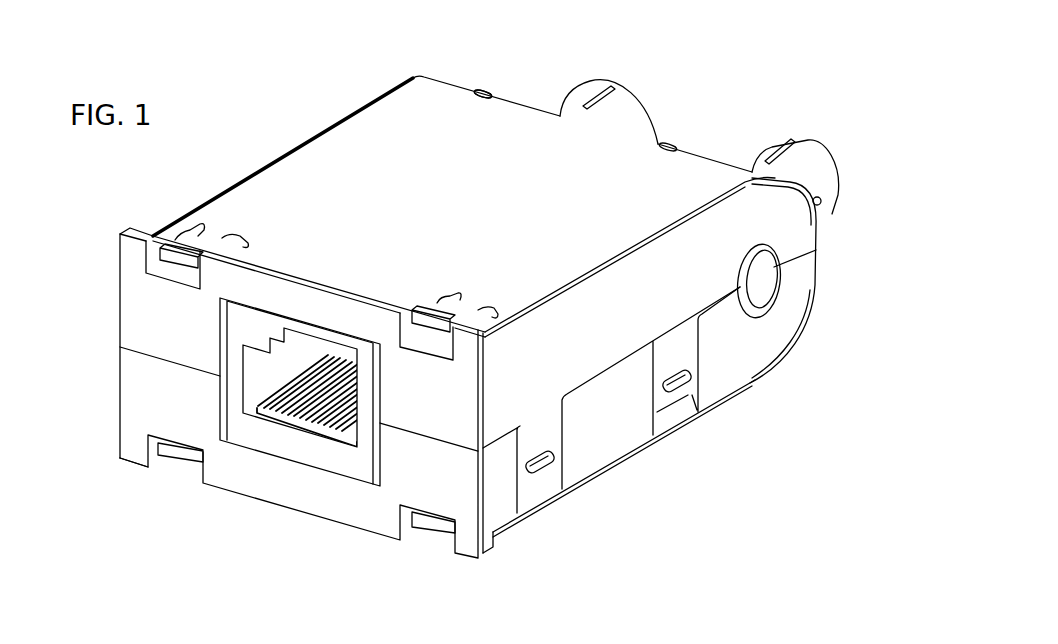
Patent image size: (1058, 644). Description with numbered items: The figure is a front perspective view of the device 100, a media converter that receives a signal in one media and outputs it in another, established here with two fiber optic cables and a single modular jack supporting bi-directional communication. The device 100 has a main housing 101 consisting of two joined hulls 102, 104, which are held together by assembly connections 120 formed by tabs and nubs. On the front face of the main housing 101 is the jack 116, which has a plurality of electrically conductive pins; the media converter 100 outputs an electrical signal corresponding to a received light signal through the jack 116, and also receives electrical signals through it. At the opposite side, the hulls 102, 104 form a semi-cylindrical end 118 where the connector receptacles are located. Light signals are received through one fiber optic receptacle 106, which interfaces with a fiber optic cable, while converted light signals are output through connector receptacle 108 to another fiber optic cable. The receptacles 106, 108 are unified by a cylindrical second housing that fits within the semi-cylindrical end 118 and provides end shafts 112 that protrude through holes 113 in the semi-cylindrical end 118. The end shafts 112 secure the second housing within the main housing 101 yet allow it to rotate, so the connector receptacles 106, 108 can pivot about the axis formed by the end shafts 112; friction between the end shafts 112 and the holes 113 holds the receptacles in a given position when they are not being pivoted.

The device 100 is at (662, 463).
The main housing 101 is at (355, 108).
The hull 102 is at (240, 210).
The hull 104 is at (270, 493).
The fiber optic receptacle 106 is at (787, 142).
The connector receptacle 108 is at (625, 100).
The end shaft 112 is at (763, 292).
The hole 113 is at (755, 312).
The RJ-45 jack 116 is at (348, 463).
The semi-cylindrical end 118 is at (458, 86).
The assembly connection 120 is at (538, 480).